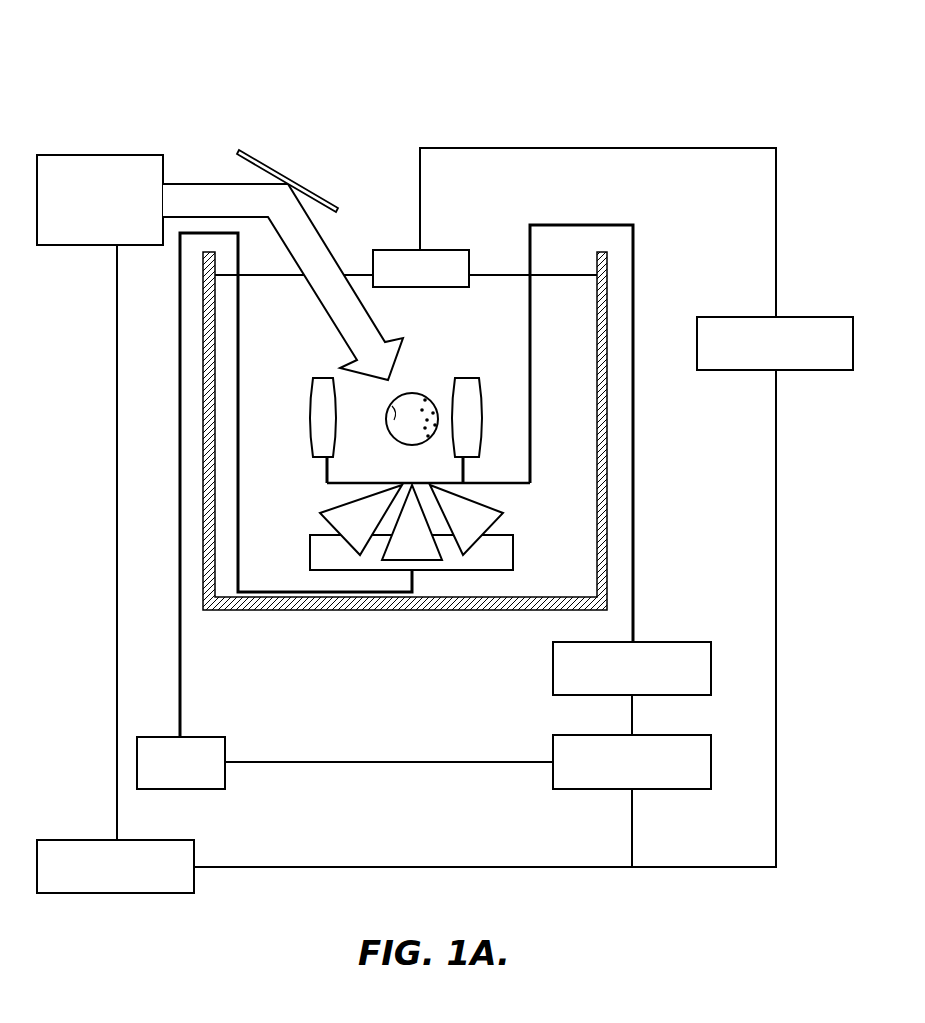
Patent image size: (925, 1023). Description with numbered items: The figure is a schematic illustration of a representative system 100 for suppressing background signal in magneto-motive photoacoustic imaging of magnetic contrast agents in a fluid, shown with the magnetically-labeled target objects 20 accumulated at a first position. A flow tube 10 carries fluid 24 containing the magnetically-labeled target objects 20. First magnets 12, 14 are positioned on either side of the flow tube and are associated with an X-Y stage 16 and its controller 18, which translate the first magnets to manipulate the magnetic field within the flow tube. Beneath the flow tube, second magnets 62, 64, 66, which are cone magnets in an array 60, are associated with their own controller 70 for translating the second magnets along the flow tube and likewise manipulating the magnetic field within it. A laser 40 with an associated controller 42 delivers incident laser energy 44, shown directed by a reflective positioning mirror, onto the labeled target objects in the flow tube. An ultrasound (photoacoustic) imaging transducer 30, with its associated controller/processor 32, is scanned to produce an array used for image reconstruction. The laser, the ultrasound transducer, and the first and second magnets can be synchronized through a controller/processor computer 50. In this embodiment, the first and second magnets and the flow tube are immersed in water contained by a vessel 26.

The system 100 is at (208, 72).
The flow tube 10 is at (398, 446).
The first magnet 12 is at (312, 394).
The first magnet 14 is at (484, 395).
The X-Y stage 16 is at (505, 483).
The controller 18 is at (711, 665).
The magnetically-labeled target objects 20 is at (428, 396).
The fluid 24 is at (392, 410).
The vessel 26 is at (268, 611).
The ultrasound imaging transducer 30 is at (383, 250).
The controller/processor 32 is at (808, 317).
The laser 40 is at (100, 155).
The controller 42 is at (80, 840).
The incident laser energy 44 is at (236, 184).
The controller/processor computer 50 is at (711, 757).
The array 60 is at (513, 550).
The second magnet 62 is at (348, 526).
The second magnet 64 is at (402, 546).
The second magnet 66 is at (458, 526).
The controller 70 is at (165, 737).